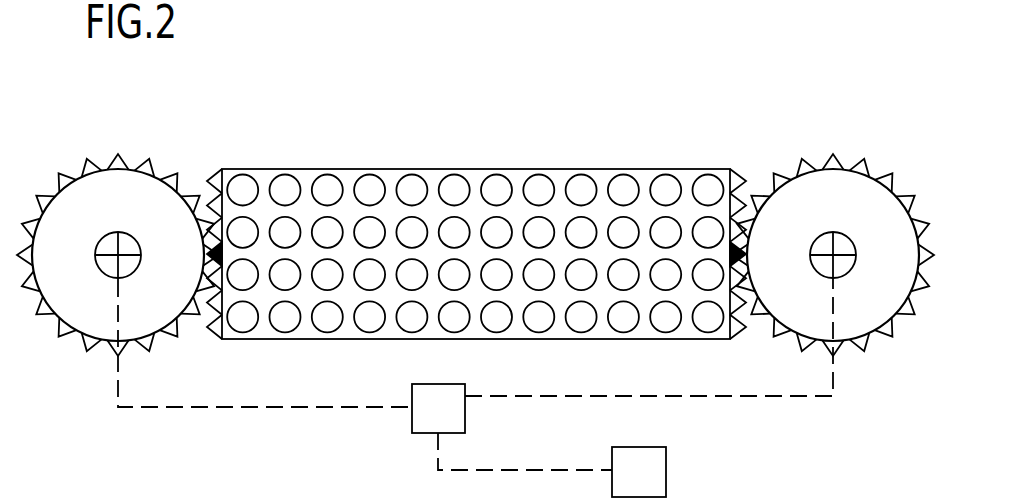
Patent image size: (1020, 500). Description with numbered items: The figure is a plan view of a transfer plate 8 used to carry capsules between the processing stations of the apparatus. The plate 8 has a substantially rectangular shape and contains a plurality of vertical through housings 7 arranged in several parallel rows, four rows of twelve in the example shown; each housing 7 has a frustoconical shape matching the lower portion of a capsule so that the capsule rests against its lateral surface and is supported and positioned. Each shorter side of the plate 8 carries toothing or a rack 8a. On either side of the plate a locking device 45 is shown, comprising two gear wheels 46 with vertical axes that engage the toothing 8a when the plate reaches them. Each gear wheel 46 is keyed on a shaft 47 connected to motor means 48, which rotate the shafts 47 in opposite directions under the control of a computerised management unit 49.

The vertical through housings 7 is at (373, 193).
The transfer plate 8 is at (516, 177).
The toothing or rack 8a is at (216, 182).
The locking device 45 is at (475, 244).
The gear wheel 46 is at (133, 208).
The shaft 47 is at (107, 262).
The motor means 48 is at (448, 417).
The computerised management unit 49 is at (649, 479).